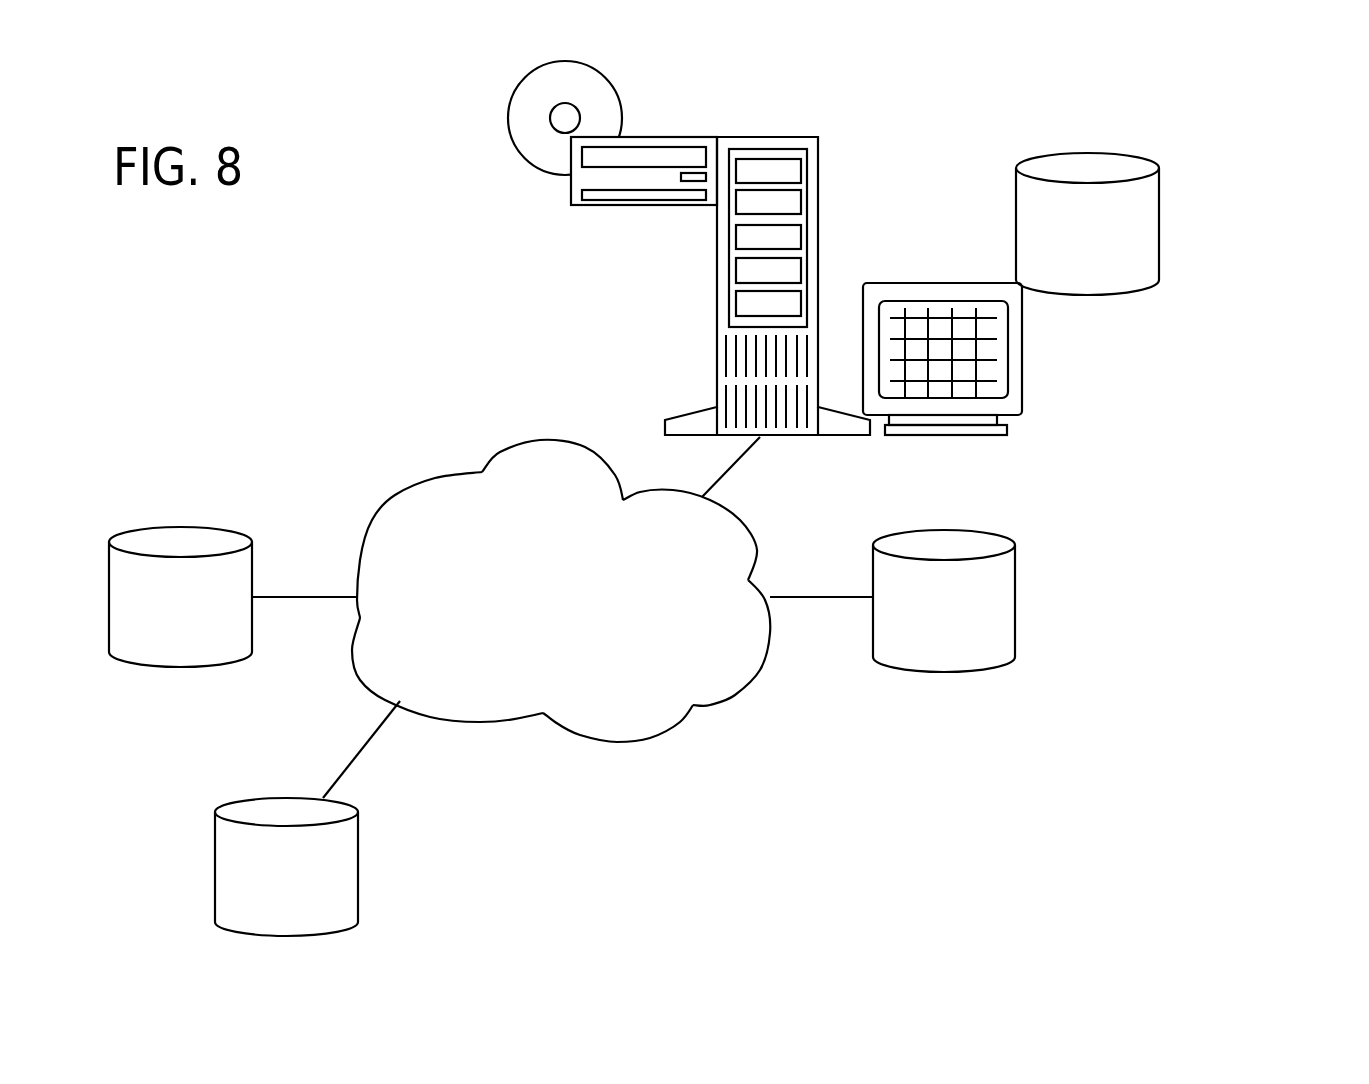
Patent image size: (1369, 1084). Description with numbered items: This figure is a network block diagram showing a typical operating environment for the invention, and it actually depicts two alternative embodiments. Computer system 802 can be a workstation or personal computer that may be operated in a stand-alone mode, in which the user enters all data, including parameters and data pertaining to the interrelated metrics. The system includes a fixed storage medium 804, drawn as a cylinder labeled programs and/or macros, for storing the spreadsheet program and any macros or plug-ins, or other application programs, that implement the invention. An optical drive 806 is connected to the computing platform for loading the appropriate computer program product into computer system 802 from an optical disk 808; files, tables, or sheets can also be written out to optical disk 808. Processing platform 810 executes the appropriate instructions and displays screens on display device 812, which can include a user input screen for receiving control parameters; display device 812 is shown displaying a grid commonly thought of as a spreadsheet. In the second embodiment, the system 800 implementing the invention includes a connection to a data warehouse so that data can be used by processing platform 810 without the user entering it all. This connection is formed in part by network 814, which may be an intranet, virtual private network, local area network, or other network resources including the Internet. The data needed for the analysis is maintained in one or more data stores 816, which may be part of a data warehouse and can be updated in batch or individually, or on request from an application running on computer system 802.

The system 800 is at (1215, 242).
The computer system 802 is at (968, 168).
The fixed storage medium 804 is at (1138, 158).
The optical drive 806 is at (663, 137).
The optical disk 808 is at (513, 140).
The processing platform 810 is at (822, 148).
The display device 812 is at (1020, 350).
The network 814 is at (422, 488).
The data stores 816 is at (110, 538).